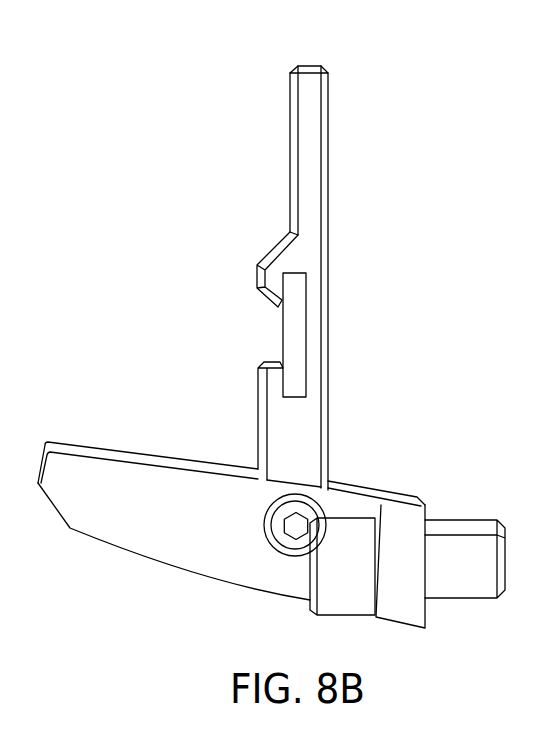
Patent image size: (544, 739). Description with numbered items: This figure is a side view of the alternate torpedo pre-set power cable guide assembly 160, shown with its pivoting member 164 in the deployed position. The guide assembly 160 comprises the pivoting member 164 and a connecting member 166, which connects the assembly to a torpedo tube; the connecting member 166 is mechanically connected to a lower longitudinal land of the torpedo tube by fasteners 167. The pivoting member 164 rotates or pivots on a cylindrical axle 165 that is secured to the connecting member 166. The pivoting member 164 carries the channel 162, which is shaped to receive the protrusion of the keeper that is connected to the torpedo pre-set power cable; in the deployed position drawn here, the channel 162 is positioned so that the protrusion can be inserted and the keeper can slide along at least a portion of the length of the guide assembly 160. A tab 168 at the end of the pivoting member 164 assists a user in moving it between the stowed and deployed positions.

The torpedo pre-set power cable guide assembly 160 is at (403, 126).
The channel 162 is at (284, 329).
The pivoting member 164 is at (330, 222).
The cylindrical axle 165 is at (285, 534).
The connecting member 166 is at (147, 535).
The fasteners 167 is at (448, 520).
The tab 168 is at (323, 66).